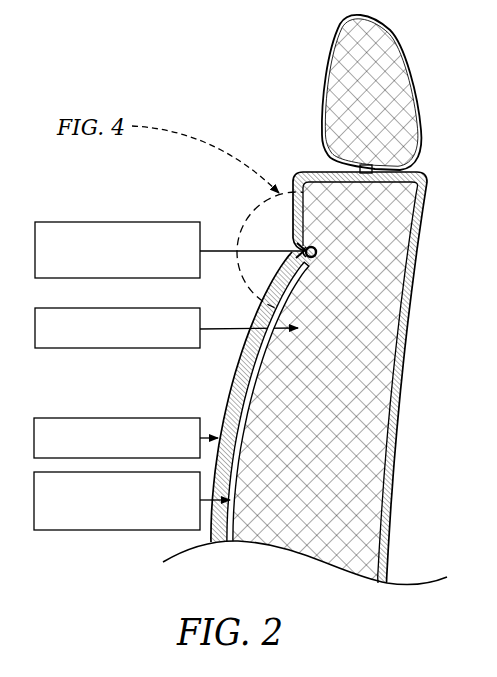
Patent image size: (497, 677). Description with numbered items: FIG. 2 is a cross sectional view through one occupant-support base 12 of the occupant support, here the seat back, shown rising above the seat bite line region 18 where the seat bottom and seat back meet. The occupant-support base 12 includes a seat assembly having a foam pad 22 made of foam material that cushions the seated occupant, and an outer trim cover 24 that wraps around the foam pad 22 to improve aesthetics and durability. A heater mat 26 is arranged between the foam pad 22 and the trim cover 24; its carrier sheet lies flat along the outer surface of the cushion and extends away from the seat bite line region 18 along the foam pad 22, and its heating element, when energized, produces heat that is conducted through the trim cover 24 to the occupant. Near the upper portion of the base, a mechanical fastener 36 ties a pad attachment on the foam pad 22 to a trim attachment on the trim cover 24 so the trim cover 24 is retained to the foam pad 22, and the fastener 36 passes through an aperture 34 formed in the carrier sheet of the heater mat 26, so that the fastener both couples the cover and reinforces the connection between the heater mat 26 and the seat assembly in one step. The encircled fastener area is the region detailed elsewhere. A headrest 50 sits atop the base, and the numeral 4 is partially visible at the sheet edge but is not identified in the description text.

The occupant-support base 12 is at (433, 196).
The seat bite line region 18 is at (219, 557).
The foam pad 22 is at (135, 349).
The outer trim cover 24 is at (82, 418).
The heater mat 26 is at (117, 530).
The aperture 34 is at (298, 242).
The mechanical fastener 36 is at (118, 222).
The headrest 50 is at (409, 92).
The vehicle seat 4 is at (490, 208).